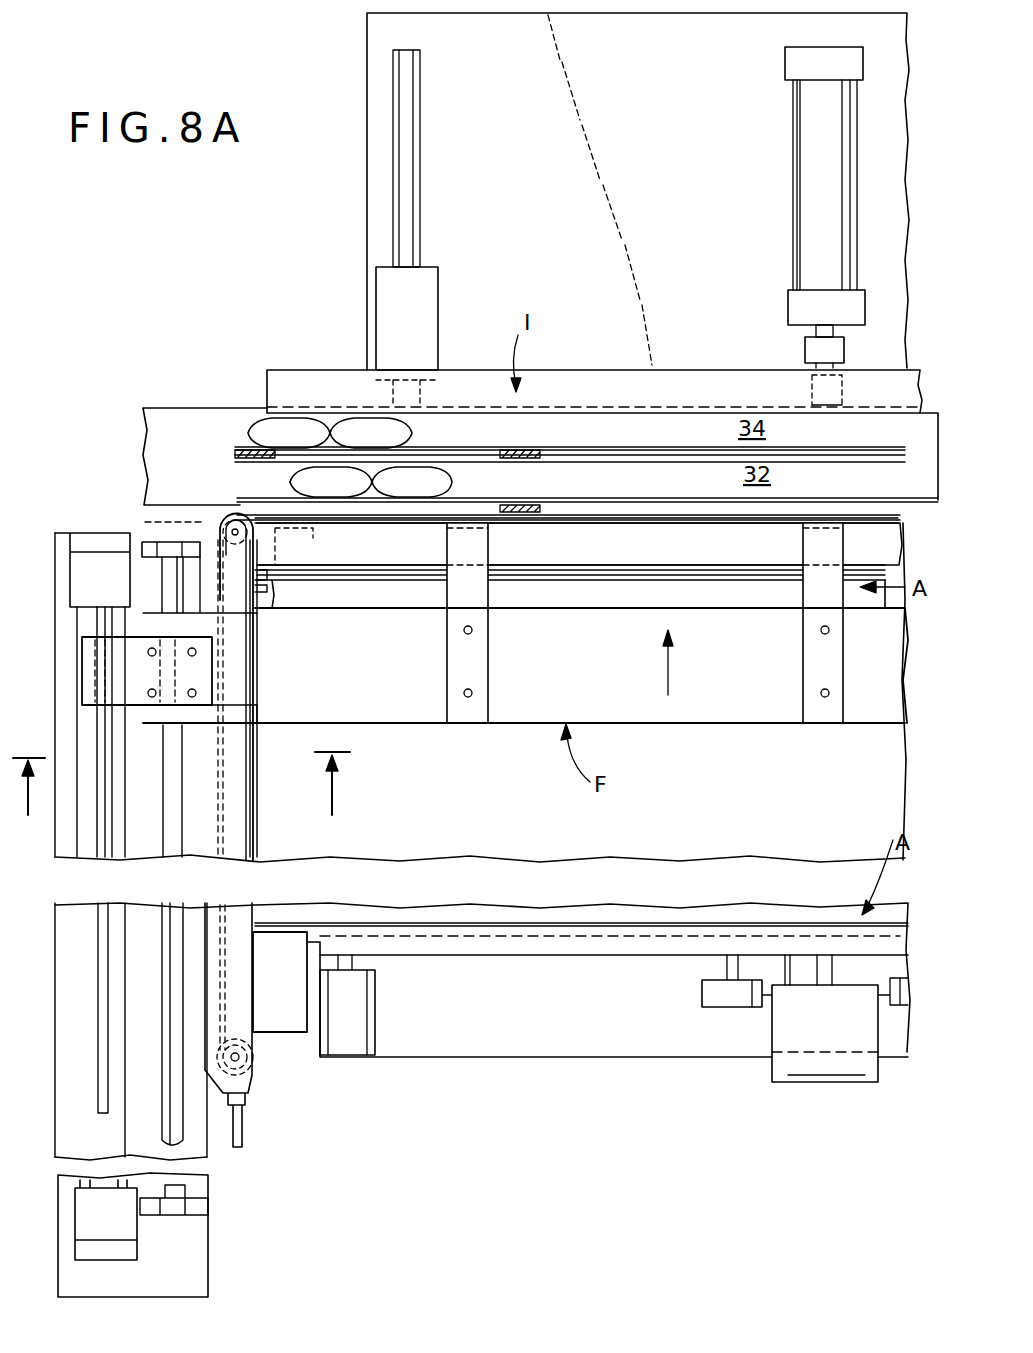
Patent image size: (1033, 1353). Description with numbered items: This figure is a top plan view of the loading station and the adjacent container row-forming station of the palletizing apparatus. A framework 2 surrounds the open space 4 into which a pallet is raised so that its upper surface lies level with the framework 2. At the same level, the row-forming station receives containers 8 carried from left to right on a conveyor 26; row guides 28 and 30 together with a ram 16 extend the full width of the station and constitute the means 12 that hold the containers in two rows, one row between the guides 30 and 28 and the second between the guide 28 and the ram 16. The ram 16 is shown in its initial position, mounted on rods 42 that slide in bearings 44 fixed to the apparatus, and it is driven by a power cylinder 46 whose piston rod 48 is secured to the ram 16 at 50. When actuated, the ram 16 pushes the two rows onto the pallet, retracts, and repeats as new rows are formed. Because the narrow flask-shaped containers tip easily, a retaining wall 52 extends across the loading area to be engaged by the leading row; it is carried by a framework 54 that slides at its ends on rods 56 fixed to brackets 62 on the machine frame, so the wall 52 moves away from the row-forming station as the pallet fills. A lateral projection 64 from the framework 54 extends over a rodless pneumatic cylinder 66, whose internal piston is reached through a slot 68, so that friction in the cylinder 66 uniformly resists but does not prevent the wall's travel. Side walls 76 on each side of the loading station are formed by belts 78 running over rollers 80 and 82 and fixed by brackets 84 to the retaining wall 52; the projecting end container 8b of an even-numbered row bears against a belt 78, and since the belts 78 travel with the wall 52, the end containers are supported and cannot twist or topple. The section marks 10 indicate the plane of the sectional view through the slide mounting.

The framework 2 is at (70, 540).
The open space 4 is at (652, 573).
The containers 8 is at (358, 437).
The end container 8b is at (292, 437).
The section line 10 is at (179, 803).
The row-maintaining means 12 is at (692, 432).
The ram 16 is at (585, 410).
The conveyor 26 is at (172, 424).
The row guide 28 is at (636, 424).
The row guide 30 is at (643, 502).
The rods 42 is at (415, 192).
The bearings 44 is at (423, 293).
The power cylinder 46 is at (810, 190).
The piston rod 48 is at (807, 360).
The securing point 50 is at (814, 407).
The retaining wall 52 is at (785, 522).
The framework 54 is at (525, 665).
The rods 56 is at (178, 995).
The brackets 62 is at (75, 547).
The lateral projection 64 is at (195, 672).
The rodless pneumatic cylinder 66 is at (115, 732).
The slot 68 is at (100, 812).
The side walls 76 is at (288, 828).
The belts 78 is at (248, 766).
The roller 80 is at (252, 1068).
The roller 82 is at (150, 548).
The brackets 84 is at (272, 592).